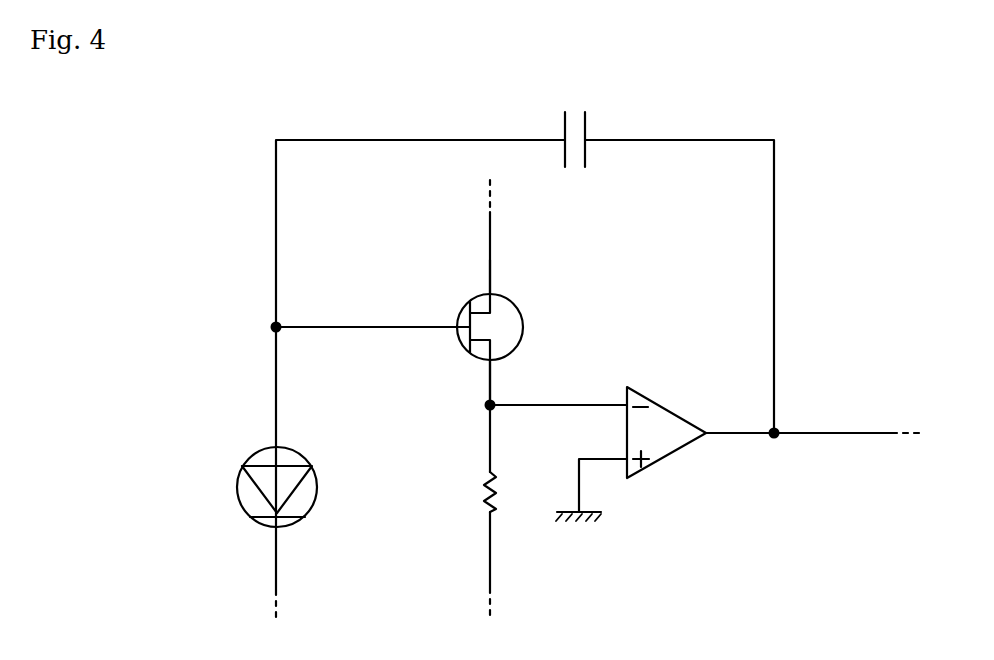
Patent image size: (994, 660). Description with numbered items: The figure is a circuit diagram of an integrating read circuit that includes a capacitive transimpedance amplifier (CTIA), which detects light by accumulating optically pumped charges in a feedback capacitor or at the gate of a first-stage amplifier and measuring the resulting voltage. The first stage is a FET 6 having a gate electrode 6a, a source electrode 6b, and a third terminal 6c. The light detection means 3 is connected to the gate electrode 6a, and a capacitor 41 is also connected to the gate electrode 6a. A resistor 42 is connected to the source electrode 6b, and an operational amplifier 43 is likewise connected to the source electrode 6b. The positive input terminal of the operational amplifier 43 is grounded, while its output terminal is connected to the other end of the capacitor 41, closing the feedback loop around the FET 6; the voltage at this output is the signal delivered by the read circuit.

The light detection means 3 is at (240, 508).
The FET 6 is at (523, 327).
The gate electrode 6a is at (443, 311).
The source electrode 6b is at (470, 380).
The collector terminal of transistor 6c is at (507, 277).
The capacitor 41 is at (590, 123).
The resistor 42 is at (481, 491).
The operational amplifier 43 is at (668, 455).